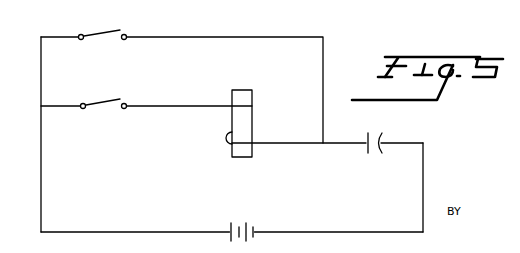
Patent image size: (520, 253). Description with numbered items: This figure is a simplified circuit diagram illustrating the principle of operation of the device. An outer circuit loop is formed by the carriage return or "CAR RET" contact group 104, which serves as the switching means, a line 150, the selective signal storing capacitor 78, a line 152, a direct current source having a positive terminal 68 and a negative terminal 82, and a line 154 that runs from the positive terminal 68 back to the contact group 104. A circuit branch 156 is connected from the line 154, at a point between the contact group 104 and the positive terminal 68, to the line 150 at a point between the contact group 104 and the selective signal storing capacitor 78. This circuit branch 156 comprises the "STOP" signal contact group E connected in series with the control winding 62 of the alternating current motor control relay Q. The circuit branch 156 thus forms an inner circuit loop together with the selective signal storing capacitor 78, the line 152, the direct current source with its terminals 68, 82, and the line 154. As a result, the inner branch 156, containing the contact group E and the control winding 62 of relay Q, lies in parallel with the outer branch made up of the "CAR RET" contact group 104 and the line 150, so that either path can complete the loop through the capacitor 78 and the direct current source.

The carriage return contact group 104 is at (103, 23).
The stop signal contact group E is at (104, 94).
The line 150 is at (314, 37).
The circuit branch 156 is at (172, 106).
The line 154 is at (43, 210).
The line 152 is at (425, 165).
The control winding 62 is at (254, 113).
The alternating current motor control relay Q is at (219, 126).
The selective signal storing capacitor 78 is at (379, 133).
The positive terminal 68 is at (231, 229).
The negative terminal 82 is at (254, 229).